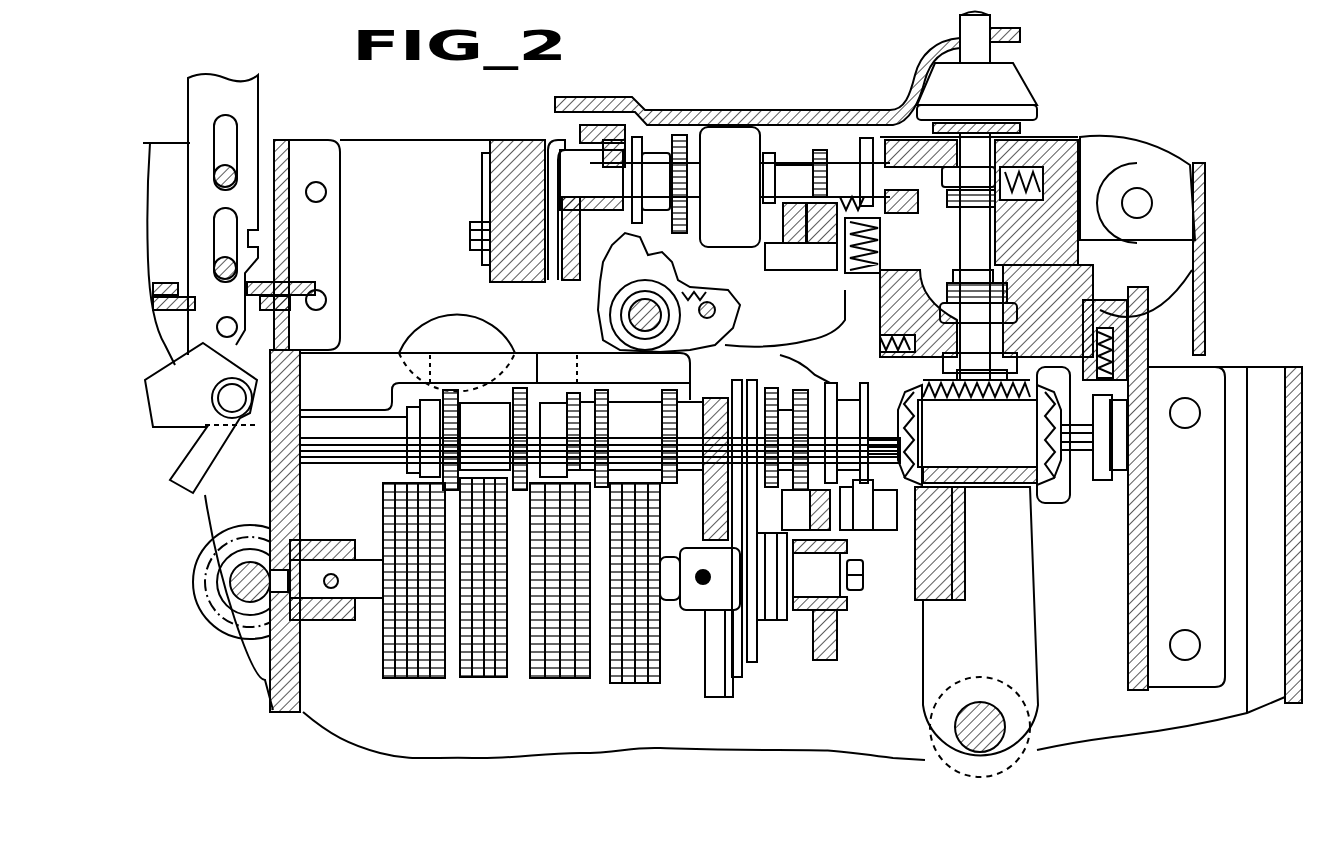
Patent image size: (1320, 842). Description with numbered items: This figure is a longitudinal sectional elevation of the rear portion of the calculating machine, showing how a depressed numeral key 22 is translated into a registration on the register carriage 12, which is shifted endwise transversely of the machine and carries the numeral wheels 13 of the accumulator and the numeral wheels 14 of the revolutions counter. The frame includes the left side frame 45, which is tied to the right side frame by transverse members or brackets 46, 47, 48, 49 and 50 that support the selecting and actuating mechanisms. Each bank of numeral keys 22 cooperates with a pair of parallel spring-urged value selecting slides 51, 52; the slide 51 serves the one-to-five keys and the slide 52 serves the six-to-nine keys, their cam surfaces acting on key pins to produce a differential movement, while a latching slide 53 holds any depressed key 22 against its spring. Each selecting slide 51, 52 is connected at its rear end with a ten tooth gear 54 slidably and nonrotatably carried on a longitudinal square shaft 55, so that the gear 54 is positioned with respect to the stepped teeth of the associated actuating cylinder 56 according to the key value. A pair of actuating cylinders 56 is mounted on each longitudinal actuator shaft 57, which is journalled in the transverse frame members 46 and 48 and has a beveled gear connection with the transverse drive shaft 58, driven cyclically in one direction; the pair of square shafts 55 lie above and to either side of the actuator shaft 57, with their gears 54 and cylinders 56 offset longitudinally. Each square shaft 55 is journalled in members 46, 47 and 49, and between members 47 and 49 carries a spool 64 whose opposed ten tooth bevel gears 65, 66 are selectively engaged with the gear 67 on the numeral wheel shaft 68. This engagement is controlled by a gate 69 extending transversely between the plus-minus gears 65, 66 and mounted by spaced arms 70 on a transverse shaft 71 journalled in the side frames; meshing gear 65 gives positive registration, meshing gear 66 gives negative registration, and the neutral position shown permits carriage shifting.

The register carriage 12 is at (1050, 126).
The numeral wheels of the accumulator 13 is at (1015, 92).
The numeral wheels of the revolutions counter 14 is at (732, 128).
The numeral keys 22 is at (253, 95).
The left side frame 45 is at (435, 145).
The transverse frame member 46 is at (295, 512).
The transverse frame member 47 is at (707, 515).
The transverse frame member 48 is at (820, 648).
The transverse frame member 49 is at (1148, 522).
The transverse frame member 50 is at (502, 182).
The value selecting slide 51 is at (407, 370).
The value selecting slide 52 is at (335, 370).
The latching slide 53 is at (303, 284).
The ten tooth gear 54 is at (517, 402).
The longitudinal square shaft 55 is at (360, 432).
The actuating cylinder 56 is at (600, 690).
The longitudinal actuator shaft 57 is at (372, 590).
The transverse drive shaft 58 is at (252, 530).
The spool 64 is at (977, 433).
The bevel gear 65 is at (916, 432).
The bevel gear 66 is at (1045, 432).
The gear on numeral wheel shaft 67 is at (995, 390).
The numeral wheel shaft 68 is at (972, 248).
The gate 69 is at (1017, 478).
The spaced arms 70 is at (1015, 618).
The transverse shaft 71 is at (985, 718).